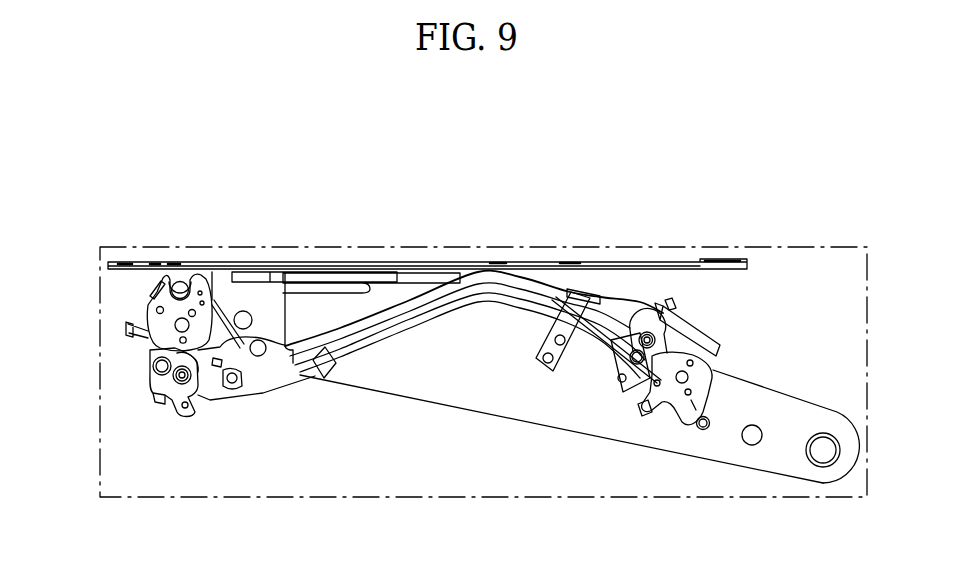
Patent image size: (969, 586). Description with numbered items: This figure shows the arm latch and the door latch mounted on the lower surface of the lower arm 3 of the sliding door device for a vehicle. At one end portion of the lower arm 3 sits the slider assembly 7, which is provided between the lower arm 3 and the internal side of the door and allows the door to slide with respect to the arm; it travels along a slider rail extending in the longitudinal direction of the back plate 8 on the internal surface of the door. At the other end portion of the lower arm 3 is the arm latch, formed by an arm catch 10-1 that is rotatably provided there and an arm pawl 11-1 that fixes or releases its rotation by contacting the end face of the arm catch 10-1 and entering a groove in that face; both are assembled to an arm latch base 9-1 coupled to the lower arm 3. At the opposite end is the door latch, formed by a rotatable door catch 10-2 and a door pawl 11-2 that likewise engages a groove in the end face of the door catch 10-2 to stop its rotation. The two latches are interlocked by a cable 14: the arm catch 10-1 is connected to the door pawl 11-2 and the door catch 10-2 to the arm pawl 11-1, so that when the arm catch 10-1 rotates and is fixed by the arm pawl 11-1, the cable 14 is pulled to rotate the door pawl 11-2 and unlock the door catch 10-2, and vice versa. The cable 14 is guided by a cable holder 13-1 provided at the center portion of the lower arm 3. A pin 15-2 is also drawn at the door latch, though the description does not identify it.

The lower arm 3 is at (447, 380).
The slider assembly 7 is at (252, 293).
The back plate 8 is at (542, 265).
The arm latch base 9-1 is at (690, 345).
The arm catch 10-1 is at (688, 428).
The door catch 10-2 is at (200, 277).
The arm pawl 11-1 is at (633, 300).
The door pawl 11-2 is at (160, 380).
The cable holder 13-1 is at (543, 365).
The cable 14 is at (418, 300).
The pivot pin 15-2 is at (178, 284).